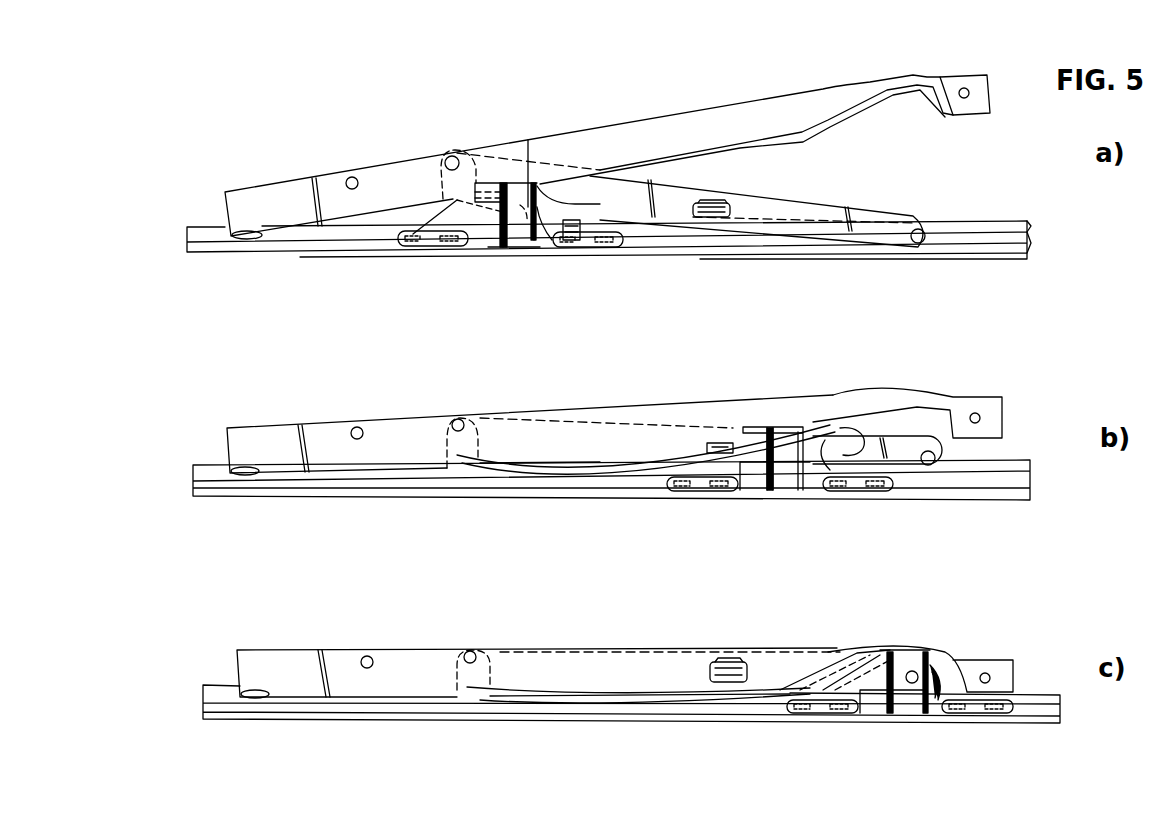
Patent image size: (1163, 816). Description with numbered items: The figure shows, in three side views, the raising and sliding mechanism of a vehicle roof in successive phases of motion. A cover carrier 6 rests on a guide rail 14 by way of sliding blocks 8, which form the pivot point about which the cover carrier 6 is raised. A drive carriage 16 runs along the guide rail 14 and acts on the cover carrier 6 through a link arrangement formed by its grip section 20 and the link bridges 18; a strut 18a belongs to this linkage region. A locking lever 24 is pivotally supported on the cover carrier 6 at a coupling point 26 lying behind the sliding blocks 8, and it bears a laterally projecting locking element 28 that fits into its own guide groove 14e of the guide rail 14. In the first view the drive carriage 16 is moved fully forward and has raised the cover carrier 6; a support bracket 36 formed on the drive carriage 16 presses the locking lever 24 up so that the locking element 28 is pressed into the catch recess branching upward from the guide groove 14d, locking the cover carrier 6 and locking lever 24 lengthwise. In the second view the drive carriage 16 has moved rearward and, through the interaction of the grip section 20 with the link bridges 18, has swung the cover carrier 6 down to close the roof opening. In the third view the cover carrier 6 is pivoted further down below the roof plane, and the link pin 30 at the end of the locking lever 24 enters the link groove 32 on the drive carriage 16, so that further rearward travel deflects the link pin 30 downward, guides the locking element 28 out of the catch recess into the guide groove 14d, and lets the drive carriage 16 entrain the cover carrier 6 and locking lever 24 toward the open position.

In FIG. 5a, the cover carrier 6 is at (637, 143).
In FIG. 5b, the cover carrier 6 is at (710, 415).
In FIG. 5c, the cover carrier 6 is at (410, 667).
In FIG. 5a, the sliding blocks 8 is at (248, 245).
In FIG. 5a, the guide rail 14 is at (655, 255).
In FIG. 5b, the guide rail 14 is at (608, 487).
In FIG. 5c, the guide rail 14 is at (631, 704).
In FIG. 5a, the guide groove 14d is at (953, 222).
In FIG. 5a, the guide groove 14e is at (708, 258).
In FIG. 5c, the guide groove 14e is at (707, 660).
In FIG. 5a, the drive carriage 16 is at (487, 220).
In FIG. 5b, the drive carriage 16 is at (760, 490).
In FIG. 5c, the drive carriage 16 is at (880, 705).
In FIG. 5a, the link bridges 18 is at (965, 95).
In FIG. 5b, the link bridges 18 is at (921, 405).
In FIG. 5c, the link bridges 18 is at (883, 652).
In FIG. 5a, the strut 18a is at (593, 172).
In FIG. 5b, the strut 18a is at (660, 435).
In FIG. 5a, the grip section 20 is at (506, 180).
In FIG. 5b, the grip section 20 is at (778, 425).
In FIG. 5c, the grip section 20 is at (858, 650).
In FIG. 5a, the locking lever 24 is at (670, 197).
In FIG. 5b, the locking lever 24 is at (893, 445).
In FIG. 5c, the locking lever 24 is at (588, 675).
In FIG. 5a, the coupling point 26 is at (451, 156).
In FIG. 5a, the locking element 28 is at (714, 208).
In FIG. 5c, the locking element 28 is at (745, 660).
In FIG. 5b, the link pin 30 is at (930, 480).
In FIG. 5c, the link pin 30 is at (935, 652).
In FIG. 5b, the link groove 32 is at (845, 430).
In FIG. 5c, the link groove 32 is at (930, 715).
In FIG. 5a, the support bracket 36 is at (566, 245).